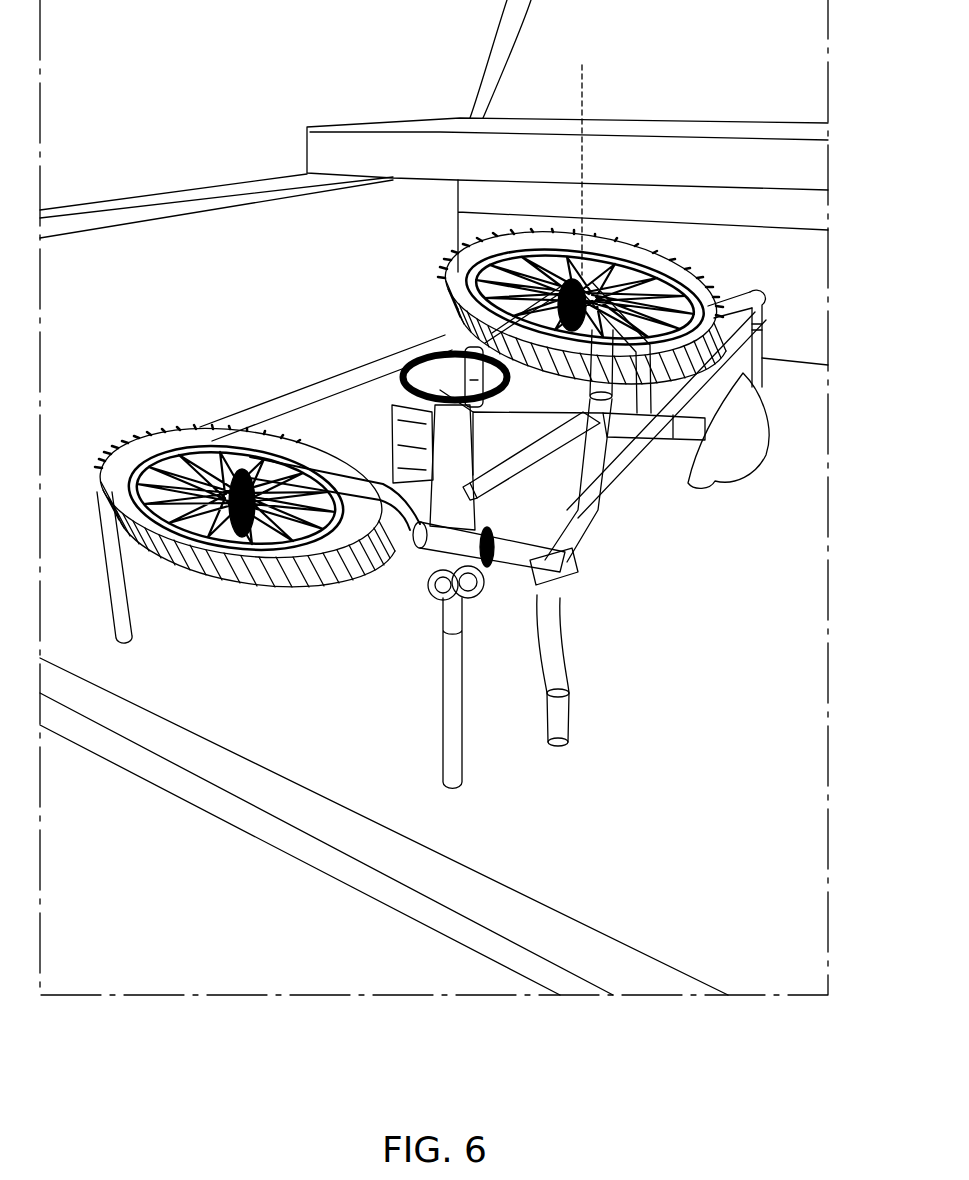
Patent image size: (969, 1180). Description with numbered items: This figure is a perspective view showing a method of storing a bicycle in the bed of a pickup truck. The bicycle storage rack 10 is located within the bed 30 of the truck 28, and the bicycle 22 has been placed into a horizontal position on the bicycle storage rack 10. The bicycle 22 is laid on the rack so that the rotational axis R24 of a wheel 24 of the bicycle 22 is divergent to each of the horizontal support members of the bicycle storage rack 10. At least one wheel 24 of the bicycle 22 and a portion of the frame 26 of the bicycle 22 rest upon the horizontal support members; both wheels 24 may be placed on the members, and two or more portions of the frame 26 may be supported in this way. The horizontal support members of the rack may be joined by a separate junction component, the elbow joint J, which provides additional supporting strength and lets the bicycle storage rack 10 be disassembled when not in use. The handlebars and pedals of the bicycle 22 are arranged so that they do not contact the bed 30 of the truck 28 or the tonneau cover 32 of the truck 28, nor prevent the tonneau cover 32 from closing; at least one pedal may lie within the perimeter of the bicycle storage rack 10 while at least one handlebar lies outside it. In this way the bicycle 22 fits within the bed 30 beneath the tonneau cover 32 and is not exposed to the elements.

The bicycle storage rack 10 is at (730, 266).
The bicycle 22 is at (360, 430).
The wheel 24 is at (178, 443).
The frame 26 is at (527, 450).
The truck 28 is at (718, 102).
The bed 30 is at (733, 740).
The tonneau cover 32 is at (422, 145).
The elbow joint J is at (556, 265).
The rotational axis of the wheel R24 is at (584, 151).